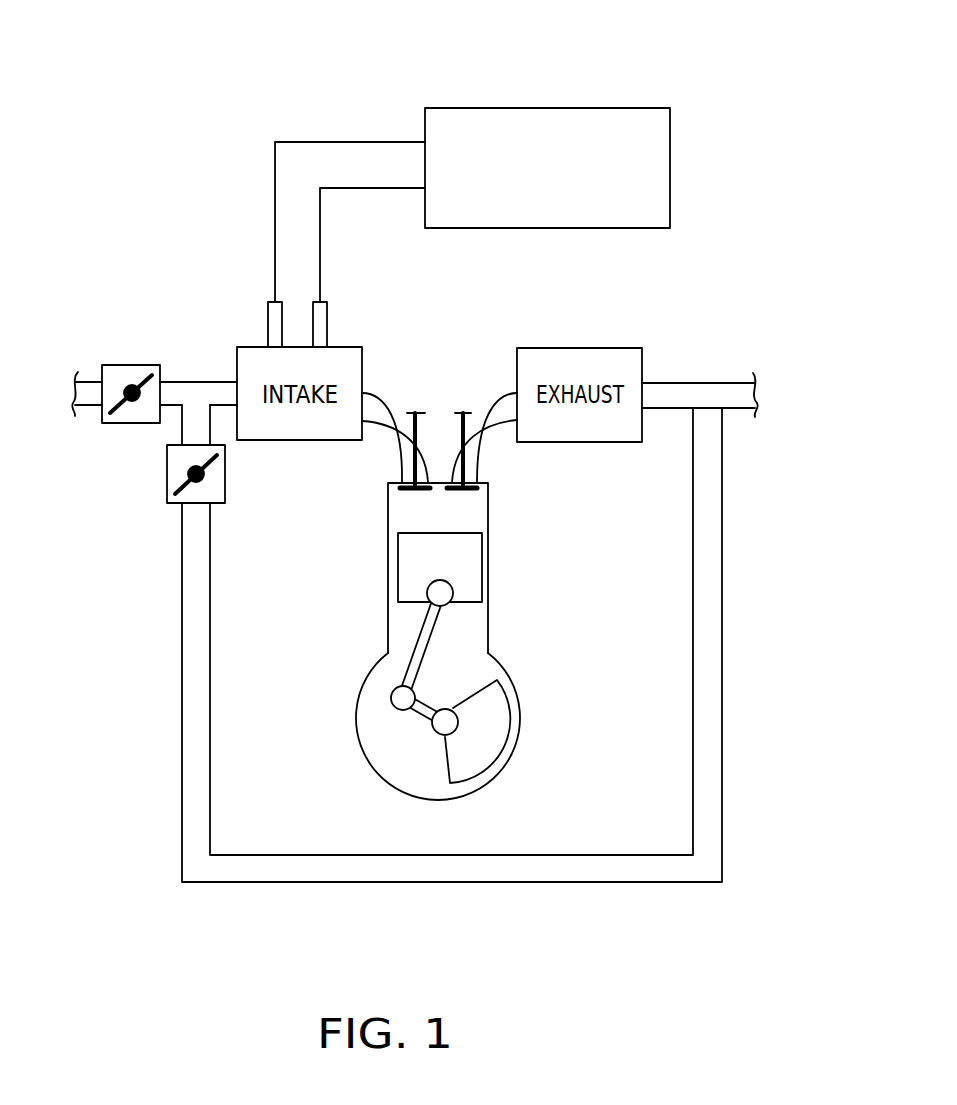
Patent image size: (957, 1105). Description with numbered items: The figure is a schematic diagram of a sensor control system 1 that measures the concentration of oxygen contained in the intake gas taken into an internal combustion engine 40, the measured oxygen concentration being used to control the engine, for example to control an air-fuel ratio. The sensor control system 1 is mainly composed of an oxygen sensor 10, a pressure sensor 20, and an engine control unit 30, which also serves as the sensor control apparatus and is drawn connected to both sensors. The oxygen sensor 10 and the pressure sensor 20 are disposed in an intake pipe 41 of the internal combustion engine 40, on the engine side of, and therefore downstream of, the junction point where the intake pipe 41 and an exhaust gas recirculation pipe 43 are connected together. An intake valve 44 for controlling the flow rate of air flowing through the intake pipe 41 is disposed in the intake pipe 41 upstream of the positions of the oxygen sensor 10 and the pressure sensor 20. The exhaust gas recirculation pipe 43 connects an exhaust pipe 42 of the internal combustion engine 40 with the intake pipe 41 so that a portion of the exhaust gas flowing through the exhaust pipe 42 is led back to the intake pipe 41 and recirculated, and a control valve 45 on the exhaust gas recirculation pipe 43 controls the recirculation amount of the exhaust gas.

The sensor control system 1 is at (240, 101).
The oxygen sensor 10 is at (265, 320).
The pressure sensor 20 is at (328, 320).
The engine control unit 30 is at (548, 108).
The internal combustion engine 40 is at (515, 640).
The intake pipe 41 is at (392, 403).
The exhaust pipe 42 is at (488, 407).
The exhaust gas recirculation pipe 43 is at (455, 882).
The intake valve 44 is at (132, 365).
The control valve 45 is at (167, 473).